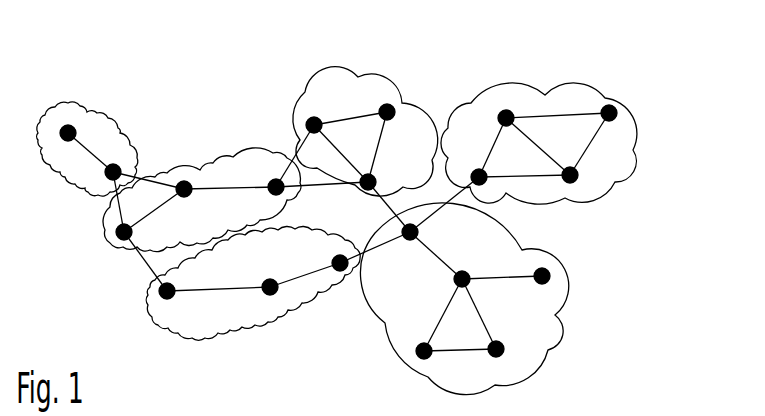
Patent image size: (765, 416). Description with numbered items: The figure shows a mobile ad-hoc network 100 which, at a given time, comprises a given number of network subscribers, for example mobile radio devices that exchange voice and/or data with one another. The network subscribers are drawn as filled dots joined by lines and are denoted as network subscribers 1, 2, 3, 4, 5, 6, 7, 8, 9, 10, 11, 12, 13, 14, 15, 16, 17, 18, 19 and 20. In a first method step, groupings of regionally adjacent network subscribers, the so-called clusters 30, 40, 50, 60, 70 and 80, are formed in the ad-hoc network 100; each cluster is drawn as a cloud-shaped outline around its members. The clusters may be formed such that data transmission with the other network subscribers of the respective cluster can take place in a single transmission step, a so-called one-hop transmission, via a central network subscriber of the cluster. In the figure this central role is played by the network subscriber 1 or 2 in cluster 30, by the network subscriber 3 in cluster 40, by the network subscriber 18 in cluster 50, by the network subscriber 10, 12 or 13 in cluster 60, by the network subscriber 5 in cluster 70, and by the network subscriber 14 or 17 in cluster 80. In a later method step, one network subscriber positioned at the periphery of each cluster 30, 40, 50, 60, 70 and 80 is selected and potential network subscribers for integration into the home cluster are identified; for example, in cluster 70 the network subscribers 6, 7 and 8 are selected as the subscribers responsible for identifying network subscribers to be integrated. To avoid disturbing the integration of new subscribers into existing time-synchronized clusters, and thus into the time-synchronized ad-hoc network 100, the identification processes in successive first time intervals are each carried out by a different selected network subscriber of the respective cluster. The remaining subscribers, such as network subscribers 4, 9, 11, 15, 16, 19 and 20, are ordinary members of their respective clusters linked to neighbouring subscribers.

The network subscriber 1 is at (76, 132).
The network subscriber 2 is at (113, 158).
The network subscriber 3 is at (187, 201).
The network subscriber 4 is at (132, 232).
The network subscriber 5 is at (462, 265).
The network subscriber 6 is at (410, 245).
The network subscriber 7 is at (542, 288).
The network subscriber 8 is at (422, 338).
The network subscriber 9 is at (501, 338).
The network subscriber 10 is at (378, 175).
The network subscriber 11 is at (266, 177).
The network subscriber 12 is at (321, 110).
The network subscriber 13 is at (379, 99).
The network subscriber 14 is at (496, 117).
The network subscriber 15 is at (597, 104).
The network subscriber 16 is at (474, 165).
The network subscriber 17 is at (581, 175).
The network subscriber 18 is at (263, 275).
The network subscriber 19 is at (172, 304).
The network subscriber 20 is at (332, 252).
The cluster 30 is at (96, 110).
The cluster 40 is at (230, 156).
The cluster 50 is at (249, 336).
The cluster 60 is at (404, 103).
The cluster 70 is at (568, 297).
The cluster 80 is at (574, 84).
The ad-hoc network 100 is at (674, 195).